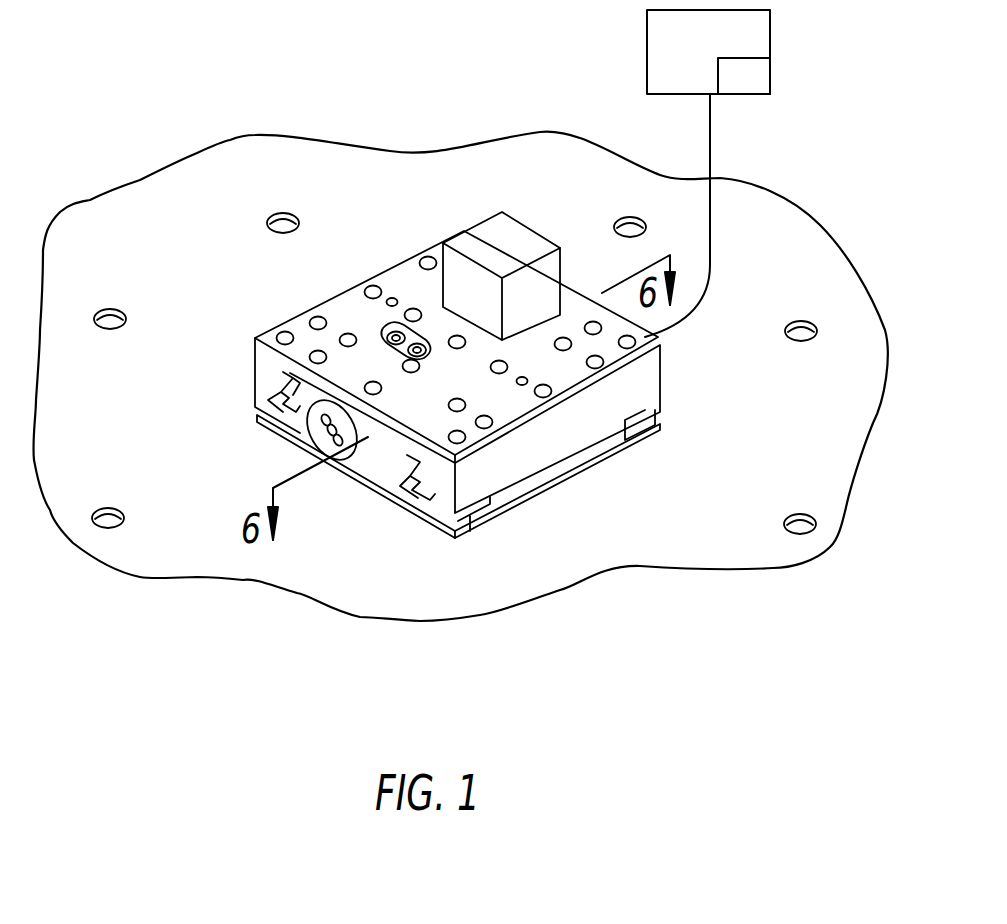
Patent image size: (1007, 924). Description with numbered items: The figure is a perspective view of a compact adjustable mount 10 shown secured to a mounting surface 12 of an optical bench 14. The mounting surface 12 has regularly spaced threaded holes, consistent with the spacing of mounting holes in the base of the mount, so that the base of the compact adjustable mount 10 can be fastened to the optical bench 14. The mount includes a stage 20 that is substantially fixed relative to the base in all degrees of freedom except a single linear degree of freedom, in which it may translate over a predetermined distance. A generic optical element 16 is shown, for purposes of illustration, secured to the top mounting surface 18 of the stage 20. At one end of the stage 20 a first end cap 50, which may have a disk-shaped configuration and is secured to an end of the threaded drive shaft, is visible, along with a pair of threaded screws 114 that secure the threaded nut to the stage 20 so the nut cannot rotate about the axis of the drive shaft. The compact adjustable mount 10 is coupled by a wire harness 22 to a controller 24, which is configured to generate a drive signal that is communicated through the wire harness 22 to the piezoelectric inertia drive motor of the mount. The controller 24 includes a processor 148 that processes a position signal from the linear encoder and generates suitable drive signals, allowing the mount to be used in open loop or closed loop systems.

The compact adjustable mount 10 is at (246, 281).
The mounting surface 12 is at (161, 447).
The optical bench 14 is at (705, 538).
The generic optical element 16 is at (510, 238).
The top mounting surface 18 is at (507, 407).
The stage 20 is at (640, 387).
The wire harness 22 is at (712, 134).
The controller 24 is at (696, 53).
The first end cap 50 is at (312, 427).
The threaded screws 114 is at (416, 344).
The processor 148 is at (760, 87).